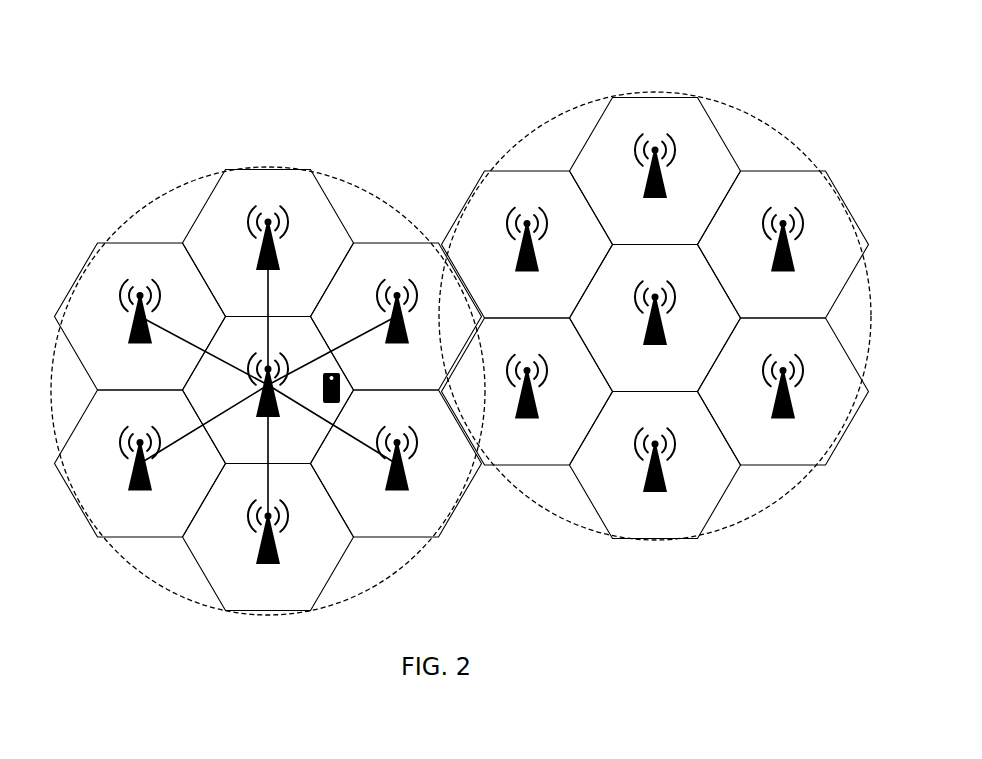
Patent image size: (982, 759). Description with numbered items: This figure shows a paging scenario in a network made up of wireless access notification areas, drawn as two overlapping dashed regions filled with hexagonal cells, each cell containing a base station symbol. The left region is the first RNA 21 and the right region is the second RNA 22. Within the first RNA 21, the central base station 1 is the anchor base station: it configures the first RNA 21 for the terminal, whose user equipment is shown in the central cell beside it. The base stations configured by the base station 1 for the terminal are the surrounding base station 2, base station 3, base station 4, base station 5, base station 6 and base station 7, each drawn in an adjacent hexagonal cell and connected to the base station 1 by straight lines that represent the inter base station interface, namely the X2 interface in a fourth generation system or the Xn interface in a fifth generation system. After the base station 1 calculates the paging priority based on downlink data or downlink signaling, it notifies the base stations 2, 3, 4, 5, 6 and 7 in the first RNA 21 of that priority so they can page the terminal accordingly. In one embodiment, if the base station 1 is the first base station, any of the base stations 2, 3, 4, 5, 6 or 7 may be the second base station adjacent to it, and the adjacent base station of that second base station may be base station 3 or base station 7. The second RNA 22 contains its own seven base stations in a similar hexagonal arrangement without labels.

The first RNA 21 is at (268, 354).
The second RNA 22 is at (748, 110).
The base station 1 is at (257, 401).
The base station 2 is at (397, 328).
The base station 3 is at (397, 471).
The base station 4 is at (268, 548).
The base station 5 is at (140, 477).
The base station 6 is at (140, 328).
The base station 7 is at (281, 254).